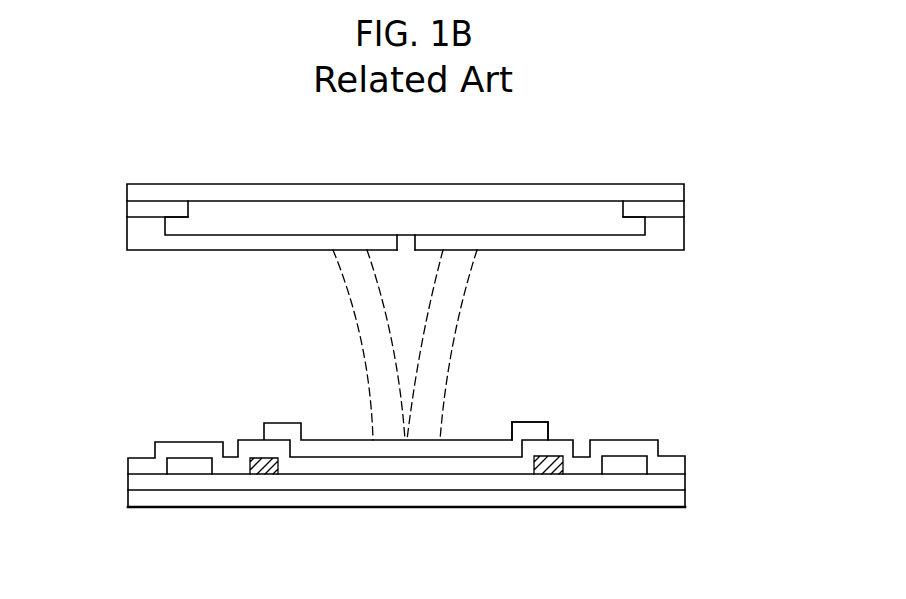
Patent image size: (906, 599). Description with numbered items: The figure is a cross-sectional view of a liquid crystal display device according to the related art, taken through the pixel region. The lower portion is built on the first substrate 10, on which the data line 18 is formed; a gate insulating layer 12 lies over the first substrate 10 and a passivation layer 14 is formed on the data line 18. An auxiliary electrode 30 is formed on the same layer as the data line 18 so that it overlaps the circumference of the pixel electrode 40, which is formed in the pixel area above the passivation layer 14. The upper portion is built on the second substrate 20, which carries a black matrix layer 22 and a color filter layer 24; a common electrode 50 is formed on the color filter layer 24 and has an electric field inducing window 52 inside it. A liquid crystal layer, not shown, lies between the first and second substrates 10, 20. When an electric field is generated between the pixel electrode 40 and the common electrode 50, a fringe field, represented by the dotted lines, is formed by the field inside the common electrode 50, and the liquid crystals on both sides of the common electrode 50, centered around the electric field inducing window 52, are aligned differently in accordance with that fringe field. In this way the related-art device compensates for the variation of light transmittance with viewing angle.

The first substrate 10 is at (680, 497).
The gate insulating layer 12 is at (128, 483).
The passivation layer 14 is at (680, 467).
The data line 18 is at (193, 467).
The second substrate 20 is at (678, 190).
The black matrix layer 22 is at (132, 209).
The color filter layer 24 is at (253, 213).
The auxiliary electrode 30 is at (266, 467).
The pixel electrode 40 is at (537, 430).
The common electrode 50 is at (678, 232).
The electric field inducing window 52 is at (403, 240).